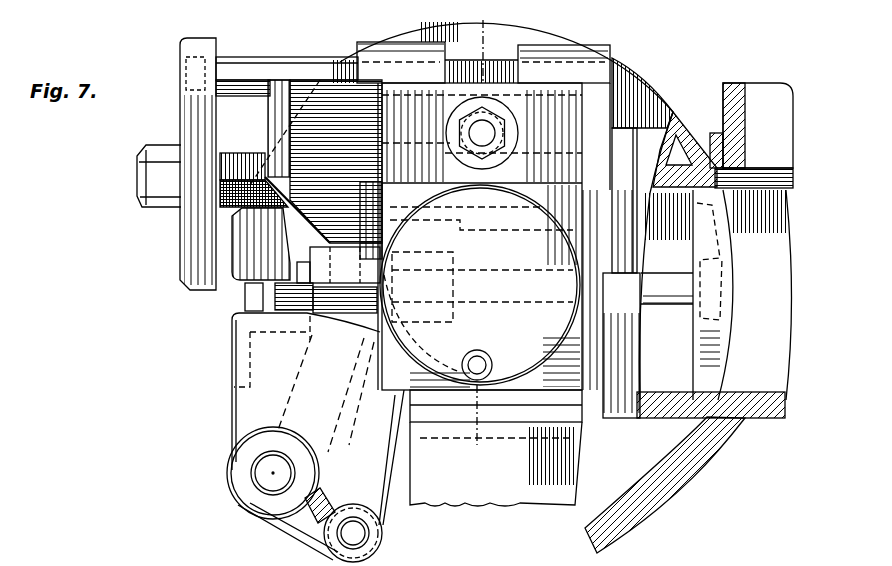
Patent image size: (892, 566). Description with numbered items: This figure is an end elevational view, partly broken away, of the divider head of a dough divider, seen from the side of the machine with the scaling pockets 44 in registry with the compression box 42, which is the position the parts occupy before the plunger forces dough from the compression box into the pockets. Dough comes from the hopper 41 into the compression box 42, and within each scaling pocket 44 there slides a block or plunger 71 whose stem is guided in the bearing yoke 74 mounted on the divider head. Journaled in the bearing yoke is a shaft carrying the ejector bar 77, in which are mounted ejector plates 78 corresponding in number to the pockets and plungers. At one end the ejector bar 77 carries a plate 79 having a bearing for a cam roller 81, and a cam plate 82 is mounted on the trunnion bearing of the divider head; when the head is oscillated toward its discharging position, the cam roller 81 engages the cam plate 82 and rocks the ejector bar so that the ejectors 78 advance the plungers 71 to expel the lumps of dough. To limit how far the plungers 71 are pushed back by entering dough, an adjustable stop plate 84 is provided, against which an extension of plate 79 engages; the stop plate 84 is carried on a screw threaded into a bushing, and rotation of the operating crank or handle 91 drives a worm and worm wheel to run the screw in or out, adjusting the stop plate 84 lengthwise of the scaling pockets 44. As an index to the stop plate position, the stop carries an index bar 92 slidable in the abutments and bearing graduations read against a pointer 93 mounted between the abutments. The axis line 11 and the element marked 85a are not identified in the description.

The axis line 11 is at (500, 14).
The hopper 41 is at (763, 88).
The compression box 42 is at (752, 372).
The scaling pockets 44 is at (666, 256).
The scaling pocket plunger 71 is at (728, 242).
The bearing yoke 74 is at (356, 346).
The ejector bar 77 is at (236, 322).
The ejector plates 78 is at (275, 292).
The plate 79 is at (243, 415).
The cam roller 81 is at (382, 536).
The cam plate 82 is at (287, 90).
The adjustable stop plate 84 is at (184, 117).
The clamp jaw 85a is at (232, 172).
The operating crank or handle 91 is at (480, 285).
The index bar 92 is at (253, 64).
The index or pointer 93 is at (486, 78).